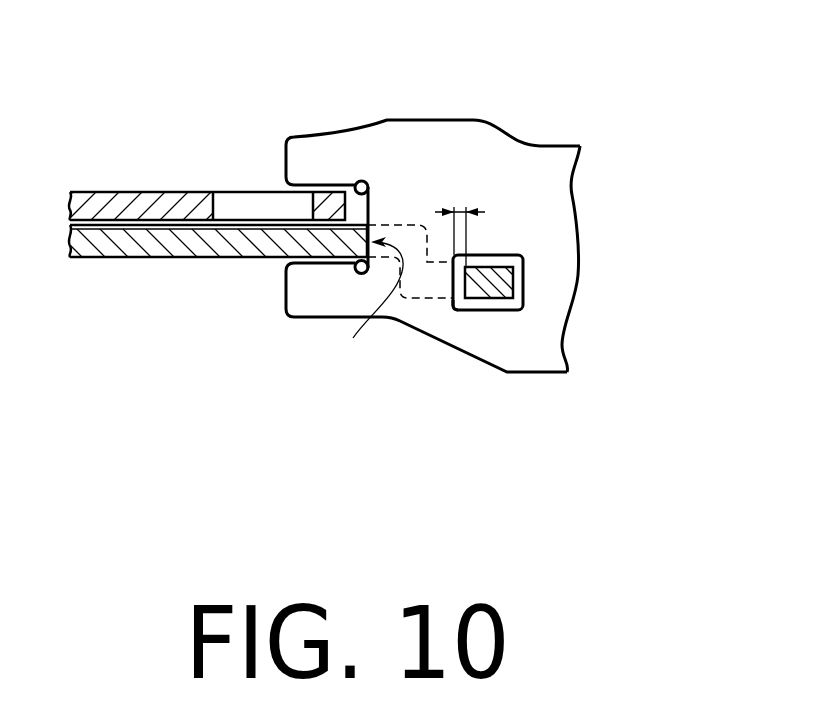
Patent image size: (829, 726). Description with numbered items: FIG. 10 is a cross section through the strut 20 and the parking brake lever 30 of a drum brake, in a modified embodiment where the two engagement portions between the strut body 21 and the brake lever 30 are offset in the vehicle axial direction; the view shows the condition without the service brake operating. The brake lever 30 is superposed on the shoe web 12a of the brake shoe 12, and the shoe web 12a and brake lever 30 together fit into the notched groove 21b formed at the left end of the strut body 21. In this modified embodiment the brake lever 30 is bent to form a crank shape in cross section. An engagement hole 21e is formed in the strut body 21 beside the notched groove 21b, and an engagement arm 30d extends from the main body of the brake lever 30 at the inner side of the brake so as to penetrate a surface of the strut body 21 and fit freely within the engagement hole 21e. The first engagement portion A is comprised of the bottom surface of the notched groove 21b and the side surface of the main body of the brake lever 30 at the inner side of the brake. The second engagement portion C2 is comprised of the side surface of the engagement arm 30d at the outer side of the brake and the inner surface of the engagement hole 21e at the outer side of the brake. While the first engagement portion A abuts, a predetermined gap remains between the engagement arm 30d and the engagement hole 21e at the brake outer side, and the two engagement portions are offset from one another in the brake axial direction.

The brake shoe 12 is at (200, 169).
The shoe web 12a is at (147, 192).
The brake lever 30 is at (137, 258).
The engagement arm 30d is at (486, 296).
The strut 20 is at (558, 146).
The strut body 21 is at (563, 185).
The notched groove 21b is at (363, 196).
The engagement hole 21e is at (518, 284).
The second engagement portion C2 is at (460, 303).
The first engagement portion A is at (373, 303).